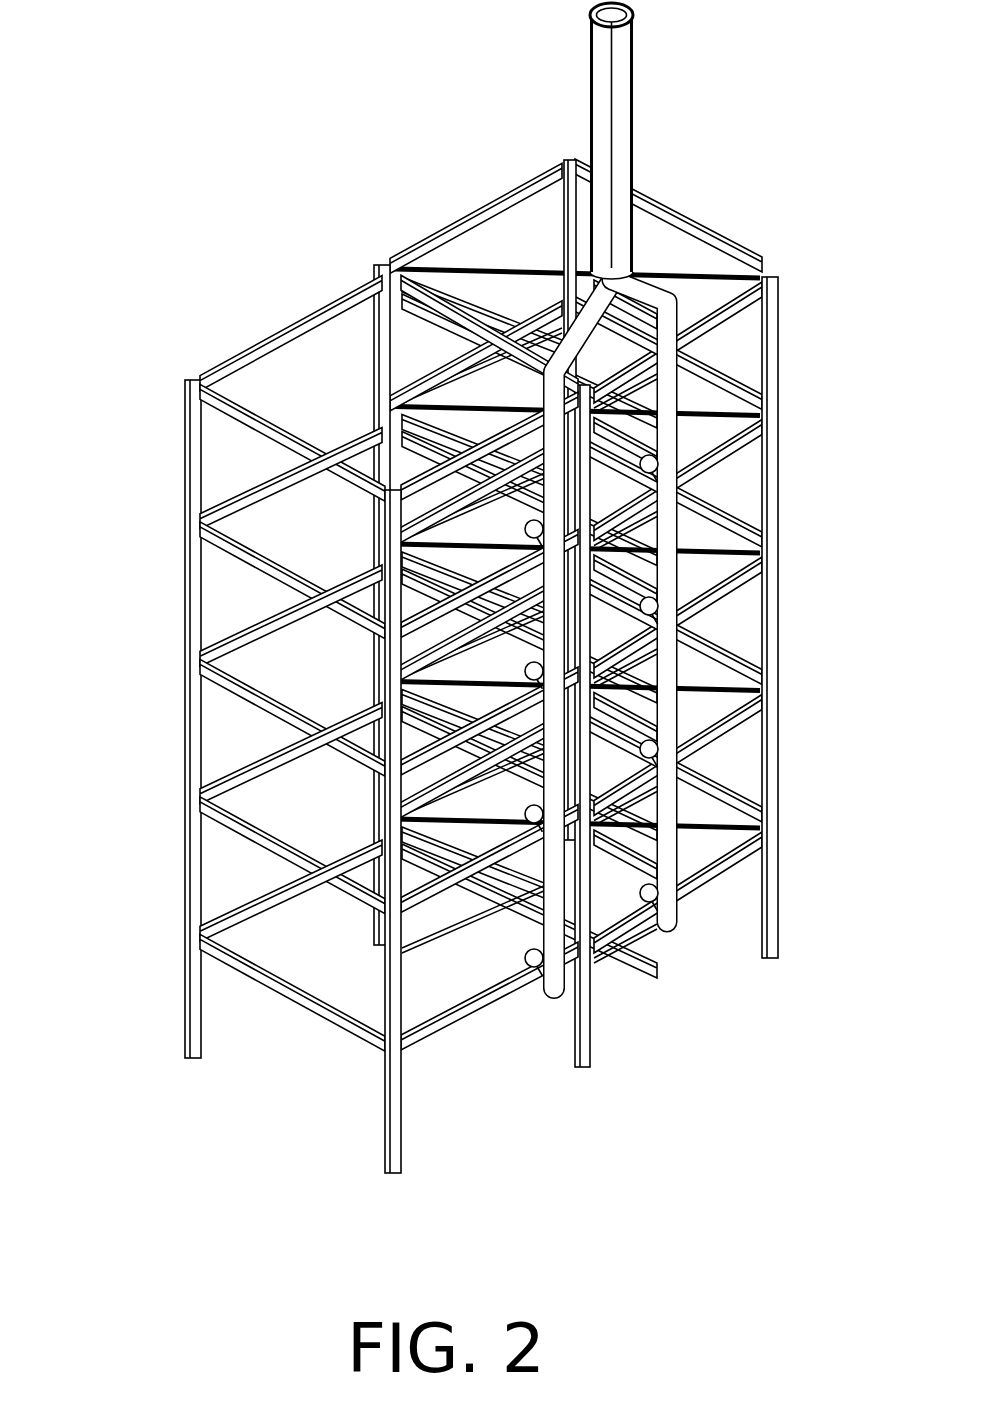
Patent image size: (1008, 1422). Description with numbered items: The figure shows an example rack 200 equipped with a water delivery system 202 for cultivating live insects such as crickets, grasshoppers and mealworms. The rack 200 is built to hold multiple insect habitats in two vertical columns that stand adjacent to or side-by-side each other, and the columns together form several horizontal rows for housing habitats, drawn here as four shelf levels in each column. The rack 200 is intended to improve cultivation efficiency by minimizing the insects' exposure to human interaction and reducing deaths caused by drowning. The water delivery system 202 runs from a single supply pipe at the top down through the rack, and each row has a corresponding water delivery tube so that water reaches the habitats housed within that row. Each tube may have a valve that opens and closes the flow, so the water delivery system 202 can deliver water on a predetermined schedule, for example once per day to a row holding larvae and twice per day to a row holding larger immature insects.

The rack 200 is at (466, 588).
The water delivery system 202 is at (515, 265).